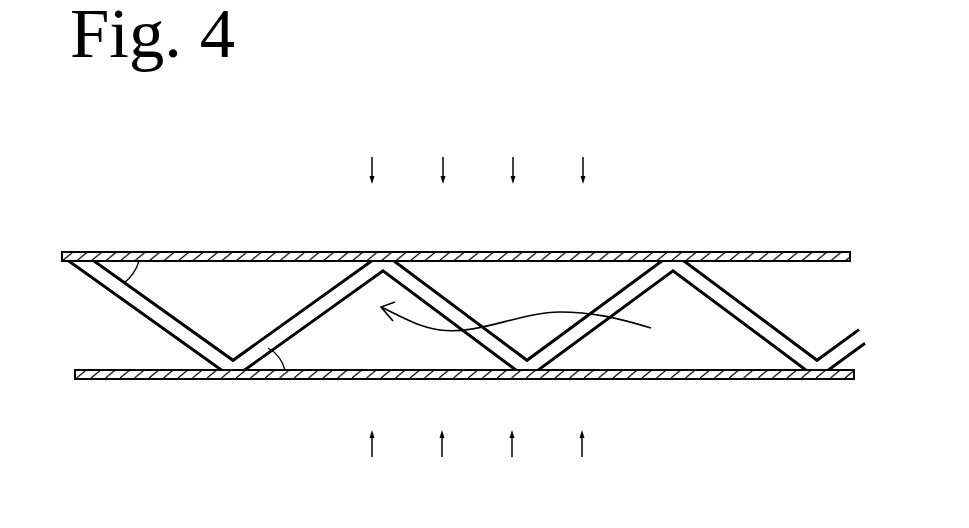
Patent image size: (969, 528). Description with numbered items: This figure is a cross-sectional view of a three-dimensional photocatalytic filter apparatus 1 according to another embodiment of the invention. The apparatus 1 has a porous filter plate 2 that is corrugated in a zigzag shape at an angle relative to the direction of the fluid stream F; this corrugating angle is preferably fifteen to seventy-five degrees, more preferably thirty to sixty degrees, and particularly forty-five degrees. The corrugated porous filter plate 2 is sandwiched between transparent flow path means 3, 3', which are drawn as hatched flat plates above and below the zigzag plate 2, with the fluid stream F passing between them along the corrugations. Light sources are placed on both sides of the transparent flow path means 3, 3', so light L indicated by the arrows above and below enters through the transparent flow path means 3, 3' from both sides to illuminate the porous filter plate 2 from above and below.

The light diffusing panel 1 is at (462, 288).
The porous filter plate 2 is at (743, 308).
The transparent flow path means 3 is at (456, 216).
The transparent flow path means 3' is at (464, 412).
The light L is at (478, 306).
The fluid stream F is at (526, 322).